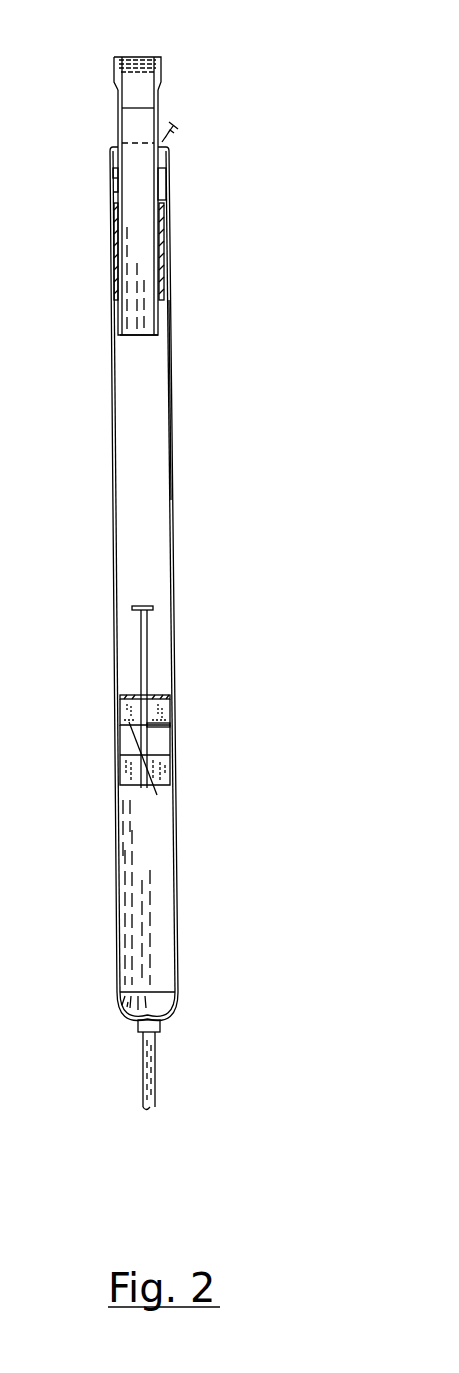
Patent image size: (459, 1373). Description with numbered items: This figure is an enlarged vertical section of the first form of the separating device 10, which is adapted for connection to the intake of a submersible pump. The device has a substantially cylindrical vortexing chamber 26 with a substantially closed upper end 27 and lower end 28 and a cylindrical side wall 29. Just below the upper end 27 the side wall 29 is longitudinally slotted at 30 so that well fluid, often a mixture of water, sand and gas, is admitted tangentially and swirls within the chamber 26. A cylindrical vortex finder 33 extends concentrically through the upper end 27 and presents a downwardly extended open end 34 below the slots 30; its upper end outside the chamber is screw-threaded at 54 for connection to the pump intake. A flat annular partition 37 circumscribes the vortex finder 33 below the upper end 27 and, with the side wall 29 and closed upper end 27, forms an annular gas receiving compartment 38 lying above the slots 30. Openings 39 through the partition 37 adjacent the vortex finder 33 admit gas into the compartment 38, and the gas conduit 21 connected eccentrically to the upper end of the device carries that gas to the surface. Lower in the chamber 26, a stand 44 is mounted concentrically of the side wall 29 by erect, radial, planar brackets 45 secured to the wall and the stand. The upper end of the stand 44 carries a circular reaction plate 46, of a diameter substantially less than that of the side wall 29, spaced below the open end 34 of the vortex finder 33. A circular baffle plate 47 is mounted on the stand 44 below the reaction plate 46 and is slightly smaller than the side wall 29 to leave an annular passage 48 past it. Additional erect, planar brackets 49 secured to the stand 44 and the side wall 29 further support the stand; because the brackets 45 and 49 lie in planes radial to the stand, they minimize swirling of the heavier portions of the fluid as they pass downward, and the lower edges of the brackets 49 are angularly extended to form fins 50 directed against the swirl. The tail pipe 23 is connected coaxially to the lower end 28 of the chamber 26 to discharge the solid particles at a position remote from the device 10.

The separating device 10 is at (96, 503).
The gas conduit 21 is at (163, 141).
The tail pipe 23 is at (142, 1082).
The vortexing chamber 26 is at (158, 457).
The upper end 27 is at (112, 146).
The lower end 28 is at (174, 1012).
The side wall 29 is at (171, 470).
The slots 30 is at (115, 276).
The vortex finder 33 is at (158, 314).
The open end 34 is at (140, 330).
The annular partition 37 is at (182, 185).
The gas receiving compartment 38 is at (113, 167).
The openings 39 is at (118, 179).
The stand 44 is at (147, 638).
The brackets 45 is at (130, 770).
The reaction plate 46 is at (140, 605).
The baffle plate 47 is at (132, 694).
The annular passage 48 is at (170, 697).
The brackets 49 is at (127, 708).
The fins 50 is at (151, 769).
The screw-threaded upper end 54 is at (125, 57).